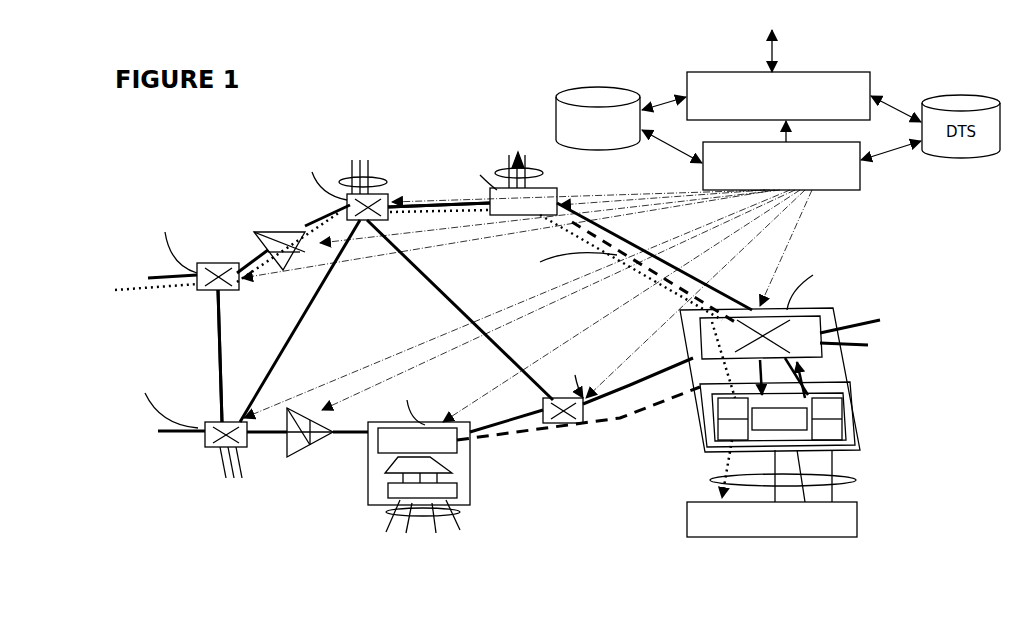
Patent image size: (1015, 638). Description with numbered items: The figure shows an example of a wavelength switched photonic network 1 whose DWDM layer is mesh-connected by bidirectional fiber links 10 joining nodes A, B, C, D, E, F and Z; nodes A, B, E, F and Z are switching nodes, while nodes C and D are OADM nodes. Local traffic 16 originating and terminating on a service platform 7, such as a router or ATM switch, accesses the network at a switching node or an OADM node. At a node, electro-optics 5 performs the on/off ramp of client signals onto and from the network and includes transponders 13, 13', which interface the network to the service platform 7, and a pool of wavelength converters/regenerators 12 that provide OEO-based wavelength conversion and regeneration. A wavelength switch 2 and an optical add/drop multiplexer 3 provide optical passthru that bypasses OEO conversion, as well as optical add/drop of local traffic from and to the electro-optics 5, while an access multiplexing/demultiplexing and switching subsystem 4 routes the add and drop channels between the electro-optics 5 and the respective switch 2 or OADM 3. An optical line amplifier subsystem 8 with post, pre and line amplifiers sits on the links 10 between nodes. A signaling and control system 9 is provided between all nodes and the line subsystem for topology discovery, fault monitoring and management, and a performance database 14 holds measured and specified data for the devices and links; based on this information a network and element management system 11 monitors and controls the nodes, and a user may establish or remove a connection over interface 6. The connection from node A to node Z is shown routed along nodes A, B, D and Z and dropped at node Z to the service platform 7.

The network 1 is at (252, 160).
The wavelength switch 2 is at (835, 310).
The optical add/drop multiplexer 3 is at (442, 420).
The access multiplexing/demultiplexing and switching subsystem 4 is at (385, 462).
The electro-optics 5 is at (462, 497).
The interface 6 is at (768, 50).
The service platform 7 is at (857, 520).
The optical line amplifier subsystem 8 is at (282, 237).
The signaling and control system 9 is at (862, 185).
The fiber link 10 is at (460, 202).
The network and element management system 11 is at (823, 72).
The regenerator 12 is at (762, 445).
The transponder 13 is at (706, 424).
The transponder 13' is at (862, 448).
The performance database 14 is at (557, 118).
The local traffic 16 is at (390, 513).